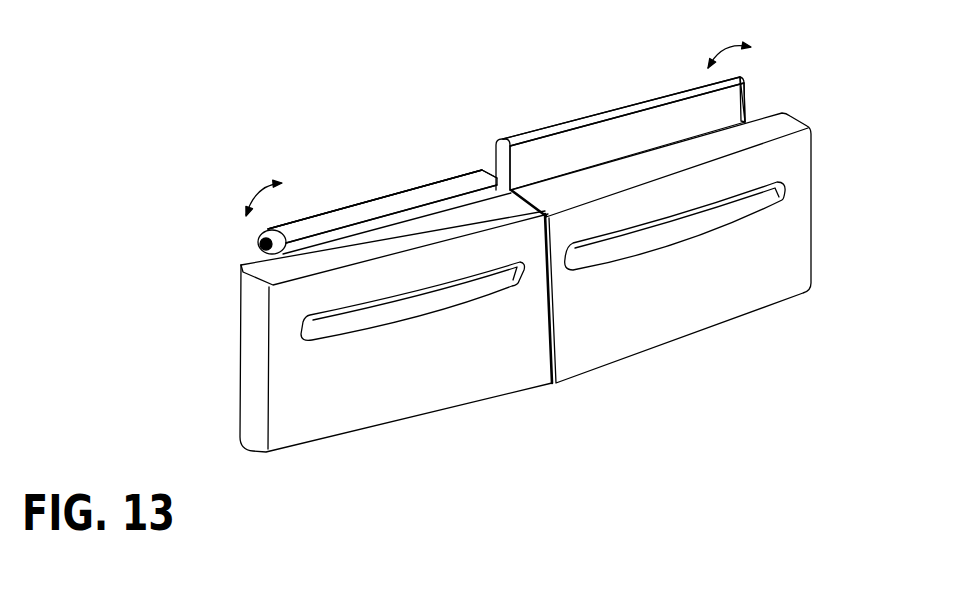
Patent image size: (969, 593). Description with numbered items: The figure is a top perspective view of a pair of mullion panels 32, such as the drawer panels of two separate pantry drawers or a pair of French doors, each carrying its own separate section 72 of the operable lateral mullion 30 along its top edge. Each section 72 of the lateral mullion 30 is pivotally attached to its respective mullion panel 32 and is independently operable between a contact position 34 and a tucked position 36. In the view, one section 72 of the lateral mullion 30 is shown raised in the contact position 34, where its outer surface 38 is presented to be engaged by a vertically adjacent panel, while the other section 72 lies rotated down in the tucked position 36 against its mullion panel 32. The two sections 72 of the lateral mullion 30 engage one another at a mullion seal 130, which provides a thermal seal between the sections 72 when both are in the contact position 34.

The operable lateral mullion 30 is at (759, 78).
The mullion panel 32 is at (257, 362).
The contact position 34 is at (617, 94).
The tucked position 36 is at (366, 194).
The outer surface 38 is at (420, 197).
The section of the lateral mullion 72 is at (330, 217).
The mullion seal 130 is at (502, 140).